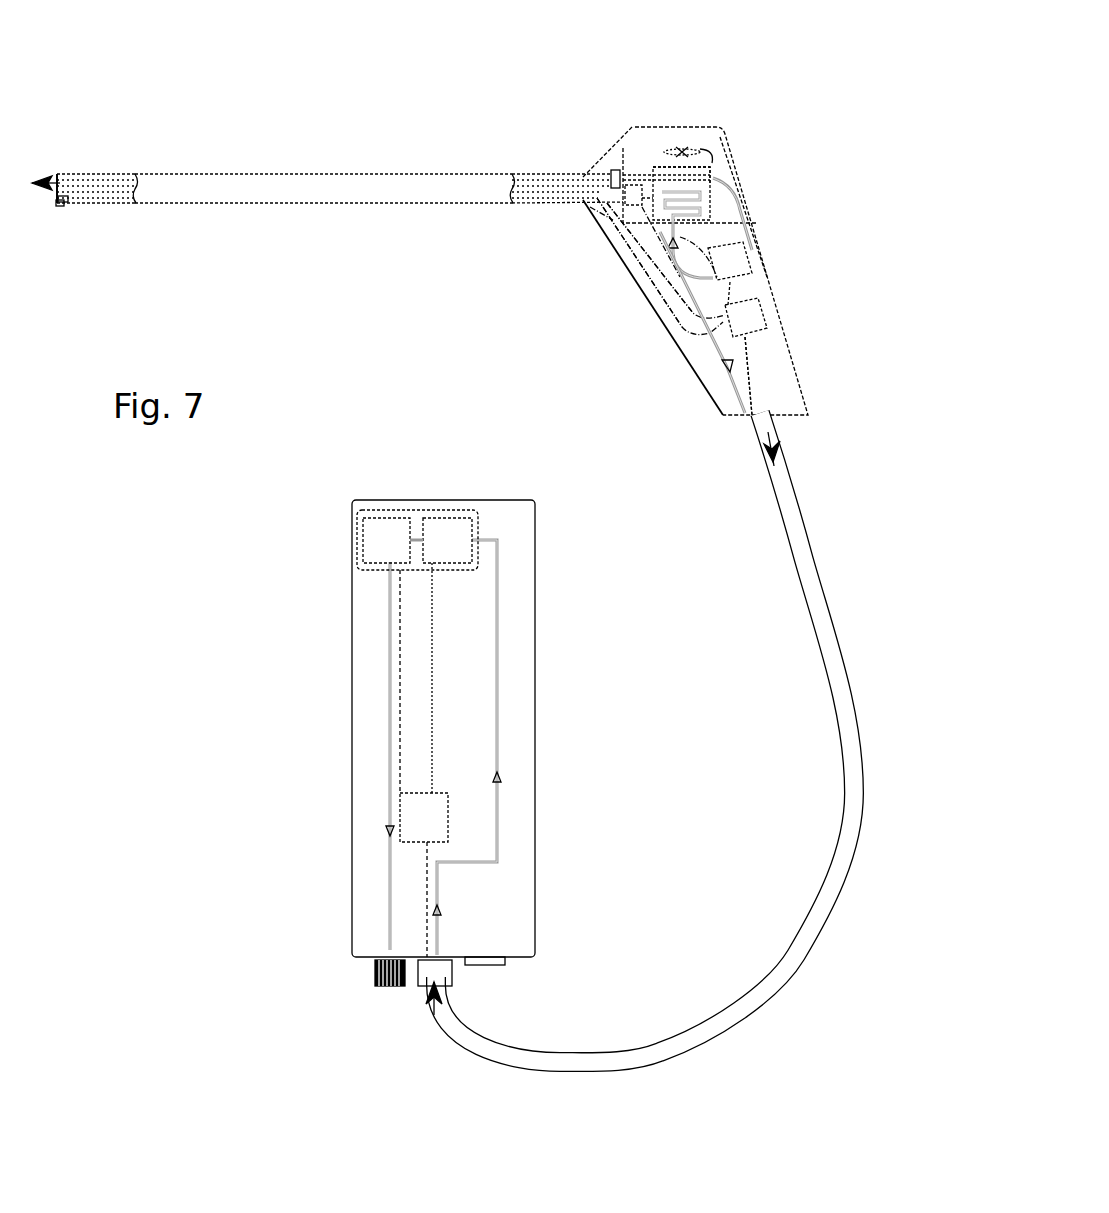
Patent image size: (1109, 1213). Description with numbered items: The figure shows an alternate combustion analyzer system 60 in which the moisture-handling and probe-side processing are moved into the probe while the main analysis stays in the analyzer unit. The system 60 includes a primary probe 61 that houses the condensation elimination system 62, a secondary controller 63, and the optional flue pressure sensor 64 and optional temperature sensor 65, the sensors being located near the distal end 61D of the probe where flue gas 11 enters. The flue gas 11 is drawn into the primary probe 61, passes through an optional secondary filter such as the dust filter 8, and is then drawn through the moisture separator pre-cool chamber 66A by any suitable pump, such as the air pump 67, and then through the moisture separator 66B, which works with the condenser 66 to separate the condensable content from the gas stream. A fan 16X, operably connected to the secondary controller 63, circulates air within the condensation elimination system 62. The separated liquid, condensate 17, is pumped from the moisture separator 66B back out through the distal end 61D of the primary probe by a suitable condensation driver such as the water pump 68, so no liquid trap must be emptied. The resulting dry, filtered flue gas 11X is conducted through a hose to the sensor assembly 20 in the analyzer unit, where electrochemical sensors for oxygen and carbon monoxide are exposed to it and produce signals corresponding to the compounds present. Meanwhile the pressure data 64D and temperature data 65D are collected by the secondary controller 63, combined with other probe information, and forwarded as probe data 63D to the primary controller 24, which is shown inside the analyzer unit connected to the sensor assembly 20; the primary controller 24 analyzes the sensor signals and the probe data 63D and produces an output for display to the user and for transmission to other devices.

The alternate combustion analyzer system 60 is at (578, 42).
The primary probe 61 is at (352, 110).
The distal end 61D is at (72, 156).
The flue gas 11 is at (47, 190).
The dry, filtered flue gas 11X is at (718, 370).
The flue pressure sensor 64 is at (65, 200).
The temperature sensor 65 is at (58, 204).
The condensation elimination system 62 is at (638, 122).
The fan 16X is at (686, 148).
The dust filter 8 is at (607, 178).
The moisture separator pre-cool chamber 66A is at (708, 168).
The moisture separator 66B is at (708, 192).
The condenser 66 is at (712, 214).
The air pump 67 is at (752, 250).
The secondary controller 63 is at (766, 312).
The probe data 63D is at (752, 358).
The condensate 17 is at (598, 198).
The water pump 68 is at (632, 203).
The temperature data 65D is at (668, 298).
The pressure data 64D is at (686, 333).
The sensor assembly 20 is at (478, 520).
The primary controller 24 is at (400, 805).